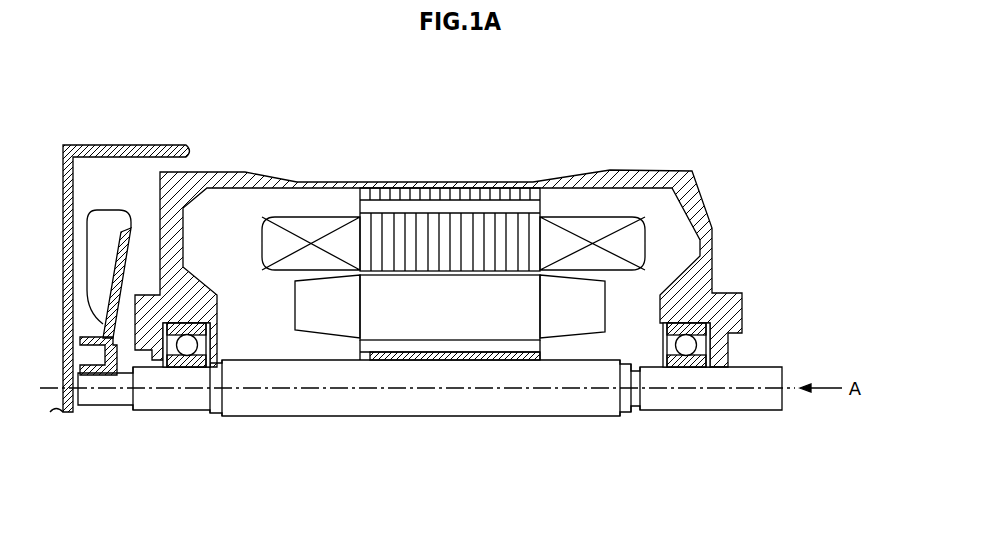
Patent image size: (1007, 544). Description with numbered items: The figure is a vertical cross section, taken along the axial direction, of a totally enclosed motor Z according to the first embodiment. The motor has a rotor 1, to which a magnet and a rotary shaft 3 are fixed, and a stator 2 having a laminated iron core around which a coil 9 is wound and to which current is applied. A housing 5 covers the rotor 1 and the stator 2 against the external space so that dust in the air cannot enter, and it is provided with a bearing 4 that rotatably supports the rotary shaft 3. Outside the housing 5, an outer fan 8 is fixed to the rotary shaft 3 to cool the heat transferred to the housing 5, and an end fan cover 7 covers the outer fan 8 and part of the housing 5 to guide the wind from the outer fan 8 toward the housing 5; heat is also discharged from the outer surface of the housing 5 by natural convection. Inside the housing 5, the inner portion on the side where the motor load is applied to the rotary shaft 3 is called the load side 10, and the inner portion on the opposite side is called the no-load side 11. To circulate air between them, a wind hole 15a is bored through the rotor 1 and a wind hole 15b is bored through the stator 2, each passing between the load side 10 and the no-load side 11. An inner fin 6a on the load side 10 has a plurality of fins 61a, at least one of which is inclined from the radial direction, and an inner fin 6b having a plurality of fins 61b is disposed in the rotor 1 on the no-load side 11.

The rotor 1 is at (450, 396).
The stator 2 is at (455, 178).
The rotary shaft 3 is at (741, 418).
The bearing 4 is at (700, 348).
The housing 5 is at (706, 212).
The inner fin 6a is at (607, 396).
The inner fin 6b is at (295, 396).
The end fan cover 7 is at (150, 146).
The outer fan 8 is at (105, 235).
The coil 9 is at (345, 243).
The load side 10 is at (670, 215).
The no-load side 11 is at (203, 223).
The wind hole 15a is at (423, 342).
The wind hole 15b is at (447, 188).
The fin 61a is at (595, 303).
The fin 61b is at (312, 303).
The totally enclosed motor Z is at (759, 185).